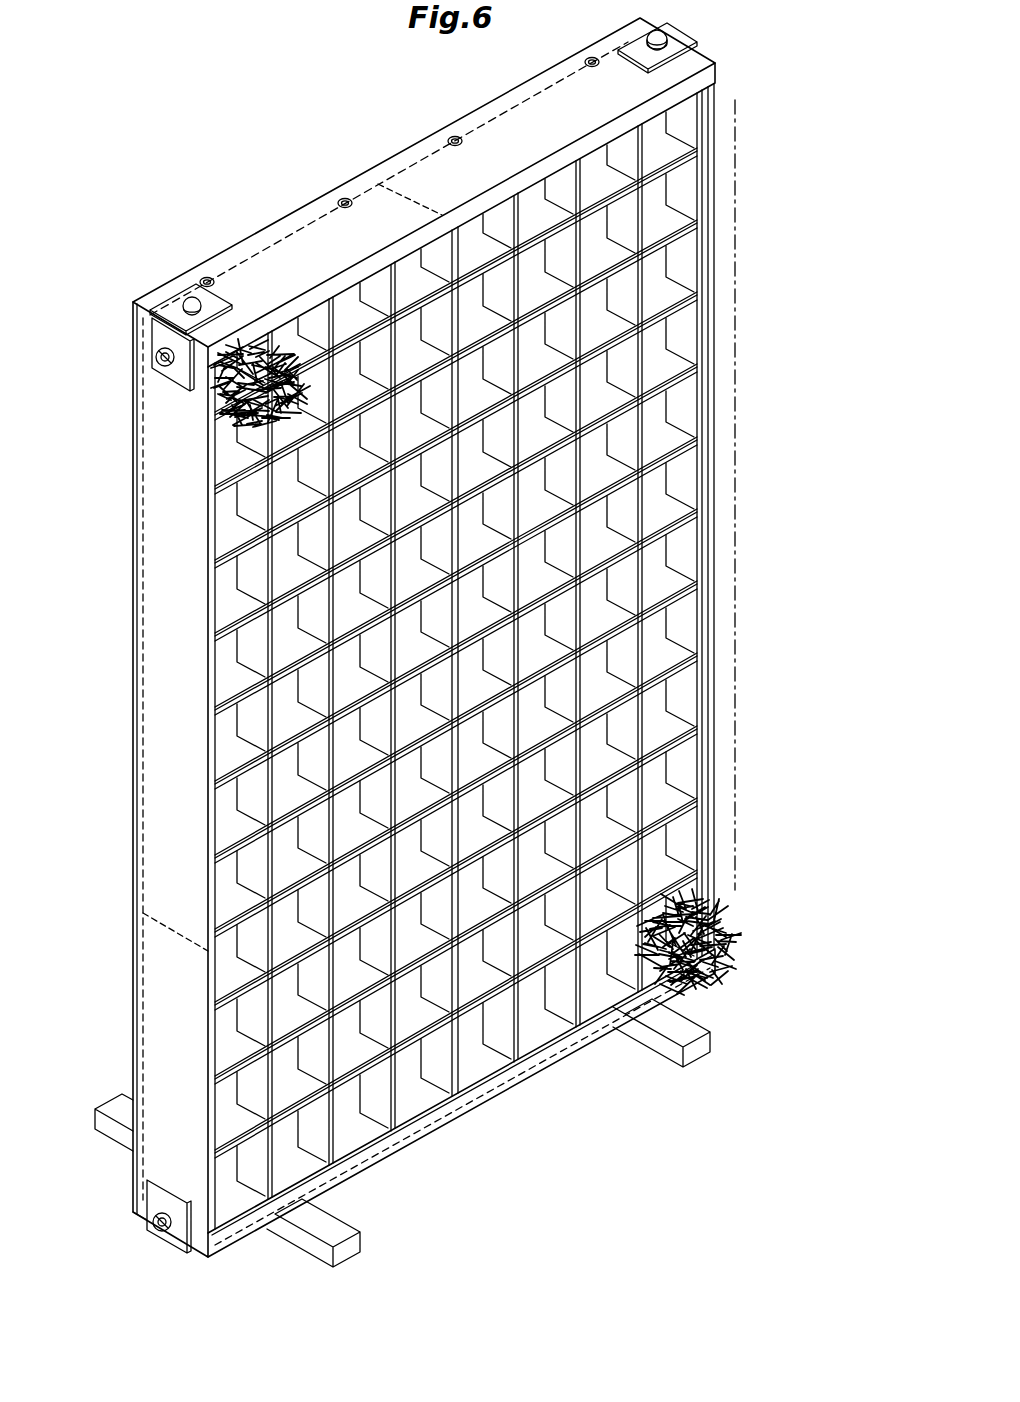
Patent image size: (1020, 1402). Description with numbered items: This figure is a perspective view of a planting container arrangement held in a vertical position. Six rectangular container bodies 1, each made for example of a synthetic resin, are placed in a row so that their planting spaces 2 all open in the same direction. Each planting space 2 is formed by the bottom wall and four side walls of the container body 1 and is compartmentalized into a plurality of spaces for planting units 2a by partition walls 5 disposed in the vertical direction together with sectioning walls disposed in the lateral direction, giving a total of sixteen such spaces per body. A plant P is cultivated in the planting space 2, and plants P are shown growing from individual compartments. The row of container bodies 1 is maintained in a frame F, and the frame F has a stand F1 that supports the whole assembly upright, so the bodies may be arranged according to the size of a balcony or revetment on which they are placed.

The container body 1 is at (429, 648).
The space for planting unit 2a is at (439, 661).
The planting space 2 is at (694, 264).
The partition wall 5 is at (500, 351).
The plant P is at (272, 348).
The frame F is at (160, 975).
The stand F1 is at (677, 1027).